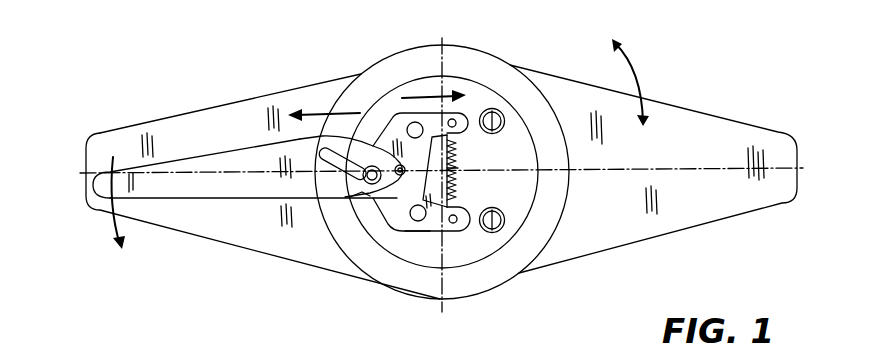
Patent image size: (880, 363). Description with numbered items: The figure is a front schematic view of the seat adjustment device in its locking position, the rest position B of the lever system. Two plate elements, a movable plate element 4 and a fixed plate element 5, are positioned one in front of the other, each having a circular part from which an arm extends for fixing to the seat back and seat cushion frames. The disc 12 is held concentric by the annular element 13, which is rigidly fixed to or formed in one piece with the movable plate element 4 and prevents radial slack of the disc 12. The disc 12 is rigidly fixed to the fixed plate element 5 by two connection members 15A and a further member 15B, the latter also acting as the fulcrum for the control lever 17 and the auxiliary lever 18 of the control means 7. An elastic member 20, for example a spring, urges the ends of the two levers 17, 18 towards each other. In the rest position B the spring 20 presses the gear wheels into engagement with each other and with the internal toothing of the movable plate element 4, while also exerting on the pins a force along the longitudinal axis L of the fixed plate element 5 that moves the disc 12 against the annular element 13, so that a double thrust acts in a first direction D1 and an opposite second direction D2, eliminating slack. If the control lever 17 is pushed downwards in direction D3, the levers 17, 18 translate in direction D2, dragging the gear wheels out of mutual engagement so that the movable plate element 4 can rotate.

The movable plate element 4 is at (680, 130).
The fixed plate element 5 is at (228, 218).
The control means 7 is at (365, 193).
The discoidal retention element 12 is at (483, 242).
The annular element 13 is at (532, 242).
The connection members 15A is at (494, 108).
The pivot pin 15B is at (362, 196).
The control lever 17 is at (178, 157).
The auxiliary lever 18 is at (428, 232).
The elastic member 20 is at (452, 182).
The spring A is at (455, 164).
The first position B is at (391, 226).
The longitudinal axis L is at (592, 170).
The first direction D1 is at (330, 112).
The second direction D2 is at (427, 98).
The downward direction of lever D3 is at (110, 223).